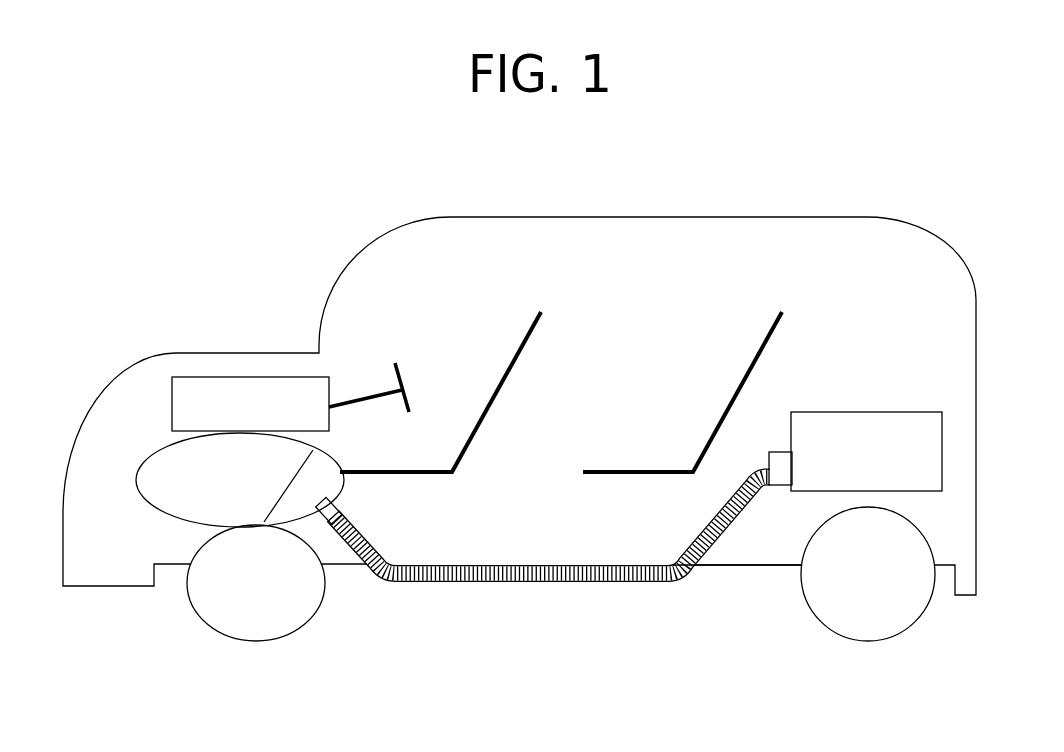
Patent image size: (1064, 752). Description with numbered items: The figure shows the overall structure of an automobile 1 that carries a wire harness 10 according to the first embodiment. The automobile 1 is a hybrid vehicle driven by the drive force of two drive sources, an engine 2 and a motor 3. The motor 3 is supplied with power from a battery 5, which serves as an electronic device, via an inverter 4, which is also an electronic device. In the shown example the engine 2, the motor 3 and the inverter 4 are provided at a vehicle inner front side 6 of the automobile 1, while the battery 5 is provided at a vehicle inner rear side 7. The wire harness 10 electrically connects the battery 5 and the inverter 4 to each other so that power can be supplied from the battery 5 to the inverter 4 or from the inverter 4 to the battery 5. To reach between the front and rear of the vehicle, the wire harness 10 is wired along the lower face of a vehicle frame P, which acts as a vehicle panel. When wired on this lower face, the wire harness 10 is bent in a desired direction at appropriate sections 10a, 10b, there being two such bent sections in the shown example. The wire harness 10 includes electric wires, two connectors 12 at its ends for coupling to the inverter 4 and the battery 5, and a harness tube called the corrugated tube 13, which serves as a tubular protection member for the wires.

The automobile 1 is at (777, 192).
The engine 2 is at (222, 390).
The motor 3 is at (152, 475).
The inverter 4 is at (330, 462).
The battery 5 is at (864, 411).
The vehicle inner front side 6 is at (105, 568).
The vehicle inner rear side 7 is at (935, 527).
The wire harness 10 is at (551, 580).
The appropriate section 10a is at (375, 582).
The rear bent portion of wire harness 10b is at (677, 582).
The connector 12 is at (343, 503).
The corrugated tube 13 is at (492, 582).
The vehicle frame P is at (759, 566).